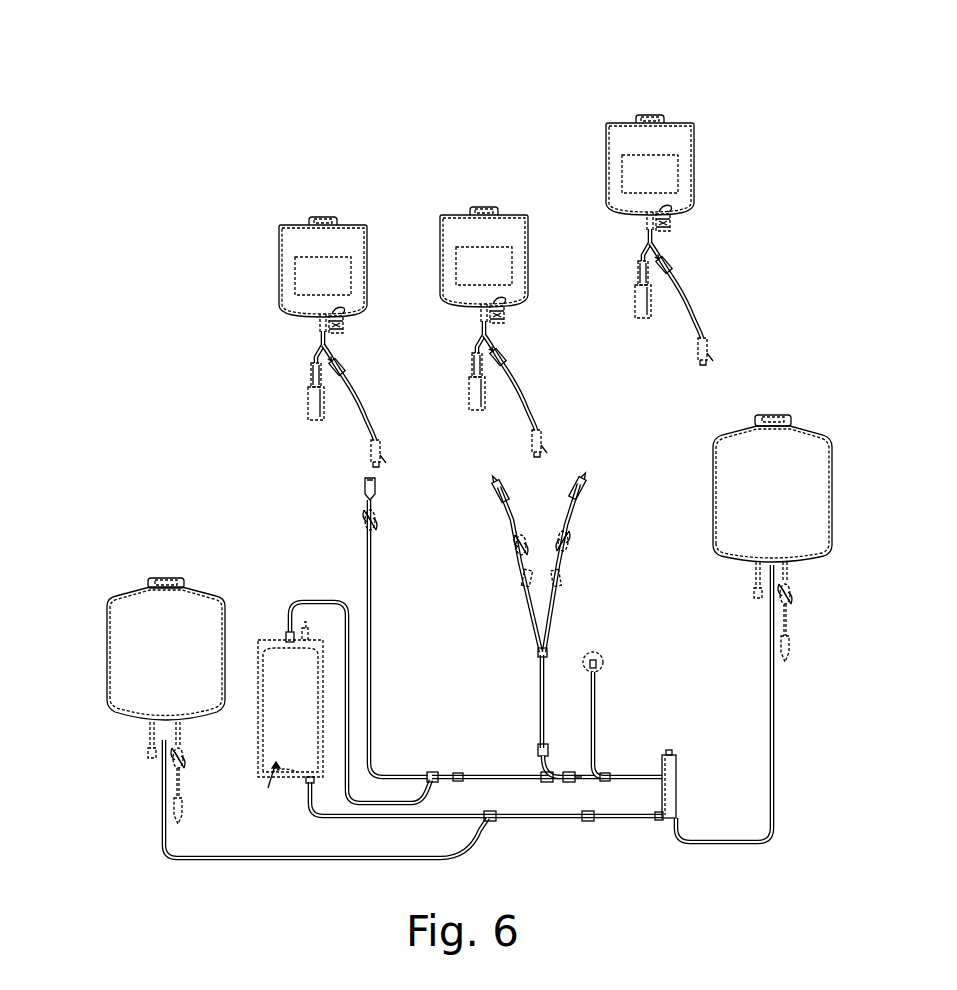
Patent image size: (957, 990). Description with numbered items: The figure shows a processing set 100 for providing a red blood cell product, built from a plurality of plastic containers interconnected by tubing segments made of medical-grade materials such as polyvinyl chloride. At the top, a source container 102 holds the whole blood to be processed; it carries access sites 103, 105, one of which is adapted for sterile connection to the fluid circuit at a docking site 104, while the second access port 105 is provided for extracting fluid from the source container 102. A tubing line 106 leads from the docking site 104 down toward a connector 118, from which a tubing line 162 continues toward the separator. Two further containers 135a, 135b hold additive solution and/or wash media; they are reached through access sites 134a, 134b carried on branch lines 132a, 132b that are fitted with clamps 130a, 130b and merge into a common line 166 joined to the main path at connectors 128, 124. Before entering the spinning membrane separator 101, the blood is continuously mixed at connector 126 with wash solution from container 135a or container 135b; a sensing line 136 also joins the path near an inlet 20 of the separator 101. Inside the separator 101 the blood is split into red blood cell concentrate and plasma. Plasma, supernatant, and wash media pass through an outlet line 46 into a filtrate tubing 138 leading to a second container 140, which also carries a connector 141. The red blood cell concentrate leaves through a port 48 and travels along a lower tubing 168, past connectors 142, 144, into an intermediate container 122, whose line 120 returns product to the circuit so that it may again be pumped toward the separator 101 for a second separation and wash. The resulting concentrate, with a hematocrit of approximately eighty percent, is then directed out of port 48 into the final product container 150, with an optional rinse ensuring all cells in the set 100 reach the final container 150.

The processing set 100 is at (797, 84).
The spinning membrane separator 101 is at (678, 765).
The source container 102 is at (358, 244).
The access site 103 is at (366, 455).
The docking site 104 is at (365, 486).
The second access port 105 is at (345, 330).
The tubing 106 is at (370, 666).
The connector 118 is at (430, 772).
The tubing 120 is at (320, 600).
The intermediate container 122 is at (262, 640).
The connector 124 is at (552, 782).
The connector 126 is at (572, 772).
The connector 128 is at (548, 746).
The clamp 130a is at (512, 546).
The clamp 130b is at (574, 543).
The tubing branch 132a is at (520, 598).
The tubing branch 132b is at (556, 605).
The access site 134a is at (496, 494).
The access site 134b is at (584, 484).
The container 135a is at (520, 232).
The container 135b is at (688, 140).
The pressure sensor line 136 is at (612, 772).
The filtrate tubing 138 is at (780, 790).
The second container 140 is at (834, 458).
The connector 141 is at (792, 655).
The connector 142 is at (600, 822).
The connector 144 is at (488, 822).
The final product container 150 is at (107, 622).
The tubing 162 is at (476, 773).
The tubing 166 is at (536, 690).
The tubing 168 is at (544, 820).
The filter inlet 20 is at (658, 755).
The tubing 46 is at (678, 823).
The port 48 is at (660, 822).